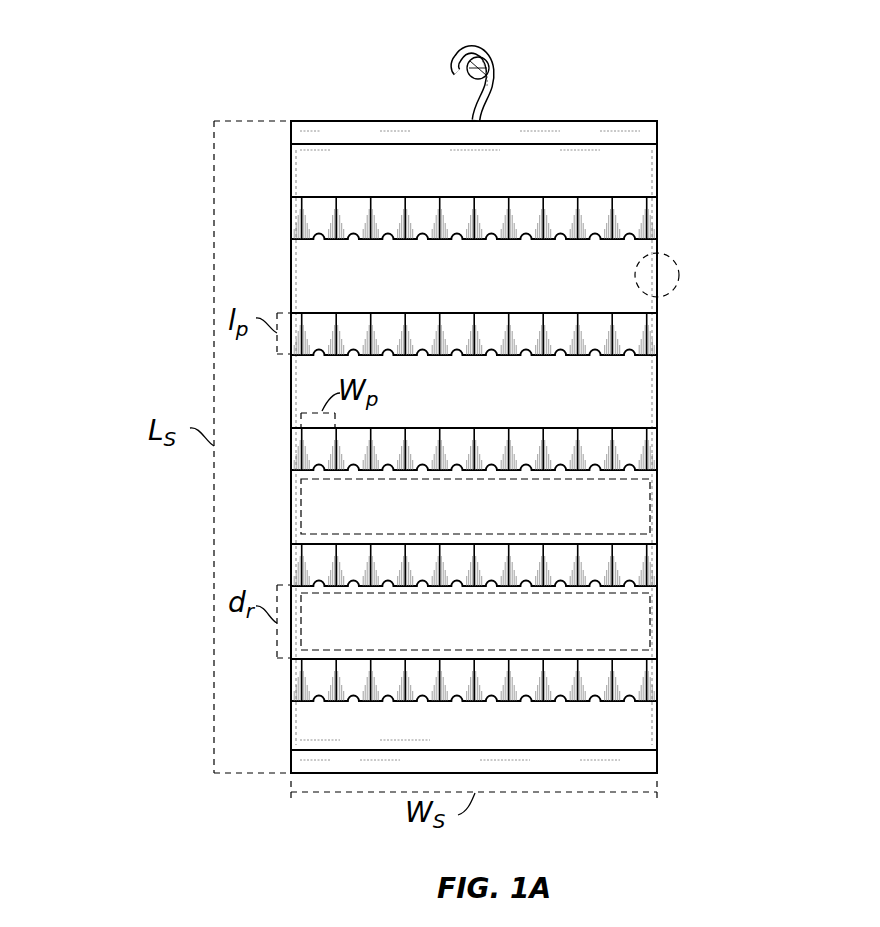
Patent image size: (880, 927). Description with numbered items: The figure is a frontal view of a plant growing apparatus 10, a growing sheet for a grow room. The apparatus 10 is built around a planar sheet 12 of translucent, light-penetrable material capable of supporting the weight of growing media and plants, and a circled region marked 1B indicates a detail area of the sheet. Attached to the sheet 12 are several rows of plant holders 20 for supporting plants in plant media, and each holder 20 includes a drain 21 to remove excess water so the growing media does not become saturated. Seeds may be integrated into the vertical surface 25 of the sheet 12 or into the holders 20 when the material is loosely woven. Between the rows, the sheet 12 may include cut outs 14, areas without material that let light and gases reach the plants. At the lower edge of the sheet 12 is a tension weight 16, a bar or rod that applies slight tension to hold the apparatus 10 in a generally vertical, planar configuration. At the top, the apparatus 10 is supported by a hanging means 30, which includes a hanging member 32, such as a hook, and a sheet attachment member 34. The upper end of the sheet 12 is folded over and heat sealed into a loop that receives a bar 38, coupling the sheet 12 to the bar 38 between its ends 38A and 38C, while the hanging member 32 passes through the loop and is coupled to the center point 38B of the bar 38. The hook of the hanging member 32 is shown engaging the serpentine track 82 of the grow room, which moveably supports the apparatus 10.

The plant growing apparatus 10 is at (150, 63).
The planar sheet 12 is at (659, 393).
The cut outs 14 is at (508, 466).
The tension weight 16 is at (660, 758).
The plant holder 20 is at (507, 466).
The drain 21 is at (317, 702).
The vertical surface 25 is at (491, 292).
The hanging means 30 is at (493, 64).
The hanging member 32 is at (494, 72).
The sheet attachment member 34 is at (398, 117).
The rod or bar 38 is at (475, 106).
The end of bar 38A is at (290, 119).
The center point of bar 38B is at (481, 118).
The end of bar 38C is at (659, 119).
The serpentine track 82 is at (471, 61).
The detail area of FIG. 1B is at (680, 276).